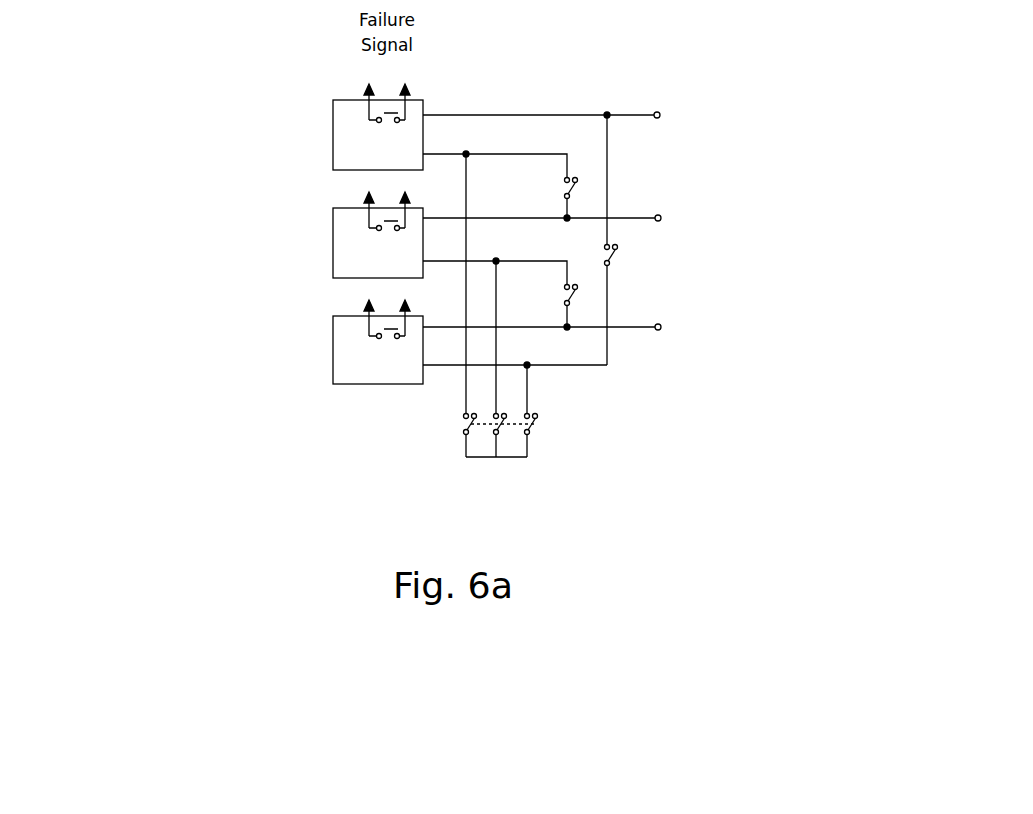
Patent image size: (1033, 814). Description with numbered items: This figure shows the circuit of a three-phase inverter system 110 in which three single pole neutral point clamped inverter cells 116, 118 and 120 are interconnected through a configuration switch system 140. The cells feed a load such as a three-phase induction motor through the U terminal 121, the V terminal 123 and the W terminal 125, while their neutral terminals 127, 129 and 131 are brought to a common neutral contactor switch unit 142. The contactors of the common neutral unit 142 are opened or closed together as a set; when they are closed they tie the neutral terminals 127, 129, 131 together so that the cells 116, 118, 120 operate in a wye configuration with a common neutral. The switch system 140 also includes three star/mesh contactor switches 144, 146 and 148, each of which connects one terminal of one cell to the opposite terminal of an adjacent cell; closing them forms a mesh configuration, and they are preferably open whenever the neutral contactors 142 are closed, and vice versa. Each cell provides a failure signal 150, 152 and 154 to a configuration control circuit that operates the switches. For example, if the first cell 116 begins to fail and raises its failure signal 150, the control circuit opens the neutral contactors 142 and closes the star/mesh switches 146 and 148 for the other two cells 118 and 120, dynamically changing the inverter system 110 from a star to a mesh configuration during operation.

The three-phase inverter system 110 is at (582, 82).
The inverter cell SNP-U 116 is at (343, 140).
The inverter cell SNP-V 118 is at (343, 240).
The inverter cell SNP-W 120 is at (343, 345).
The terminal U 121 is at (660, 107).
The terminal V 123 is at (661, 212).
The terminal W 125 is at (665, 338).
The neutral terminal U2 127 is at (453, 133).
The neutral terminal V2 129 is at (463, 245).
The neutral terminal W2 131 is at (463, 351).
The configuration switch system 140 is at (591, 379).
The common neutral contactor switch unit CTT-N 142 is at (535, 445).
The star/mesh contactor switch CTT-U 144 is at (578, 187).
The star/mesh contactor switch CTT-V 146 is at (578, 294).
The star/mesh contactor switch CTT-W 148 is at (663, 262).
The failure signal FL-U 150 is at (408, 82).
The failure signal FL-V 152 is at (362, 197).
The failure signal FL-W 154 is at (362, 300).